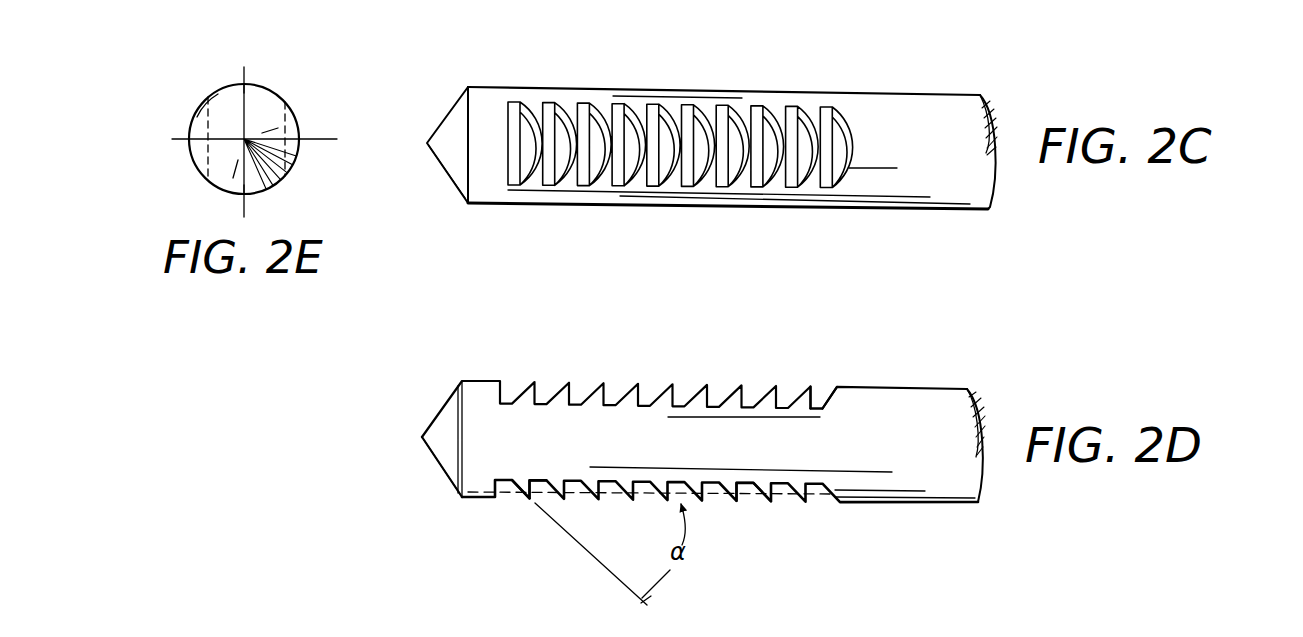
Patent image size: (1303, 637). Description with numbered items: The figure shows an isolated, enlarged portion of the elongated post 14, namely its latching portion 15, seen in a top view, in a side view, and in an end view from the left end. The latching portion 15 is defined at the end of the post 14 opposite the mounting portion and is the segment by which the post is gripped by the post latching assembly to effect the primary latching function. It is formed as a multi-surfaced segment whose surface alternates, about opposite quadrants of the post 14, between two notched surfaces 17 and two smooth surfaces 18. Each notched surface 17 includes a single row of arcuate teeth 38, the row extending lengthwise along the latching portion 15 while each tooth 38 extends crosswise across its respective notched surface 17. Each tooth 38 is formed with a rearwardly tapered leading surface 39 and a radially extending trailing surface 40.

In FIG. 2E, the post 14 is at (205, 186).
In FIG. 2C, the post 14 is at (994, 204).
In FIG. 2D, the post 14 is at (982, 503).
In FIG. 2E, the latching portion 15 is at (224, 142).
In FIG. 2C, the latching portion 15 is at (466, 84).
In FIG. 2E, the notched surface 17 is at (198, 119).
In FIG. 2C, the notched surface 17 is at (858, 115).
In FIG. 2D, the notched surface 17 is at (743, 490).
In FIG. 2E, the smooth surface 18 is at (243, 83).
In FIG. 2D, the smooth surface 18 is at (708, 463).
In FIG. 2C, the arcuate tooth 38 is at (542, 140).
In FIG. 2D, the arcuate tooth 38 is at (813, 380).
In FIG. 2D, the rearwardly tapered leading surface 39 is at (804, 386).
In FIG. 2D, the radially extending trailing surface 40 is at (816, 389).